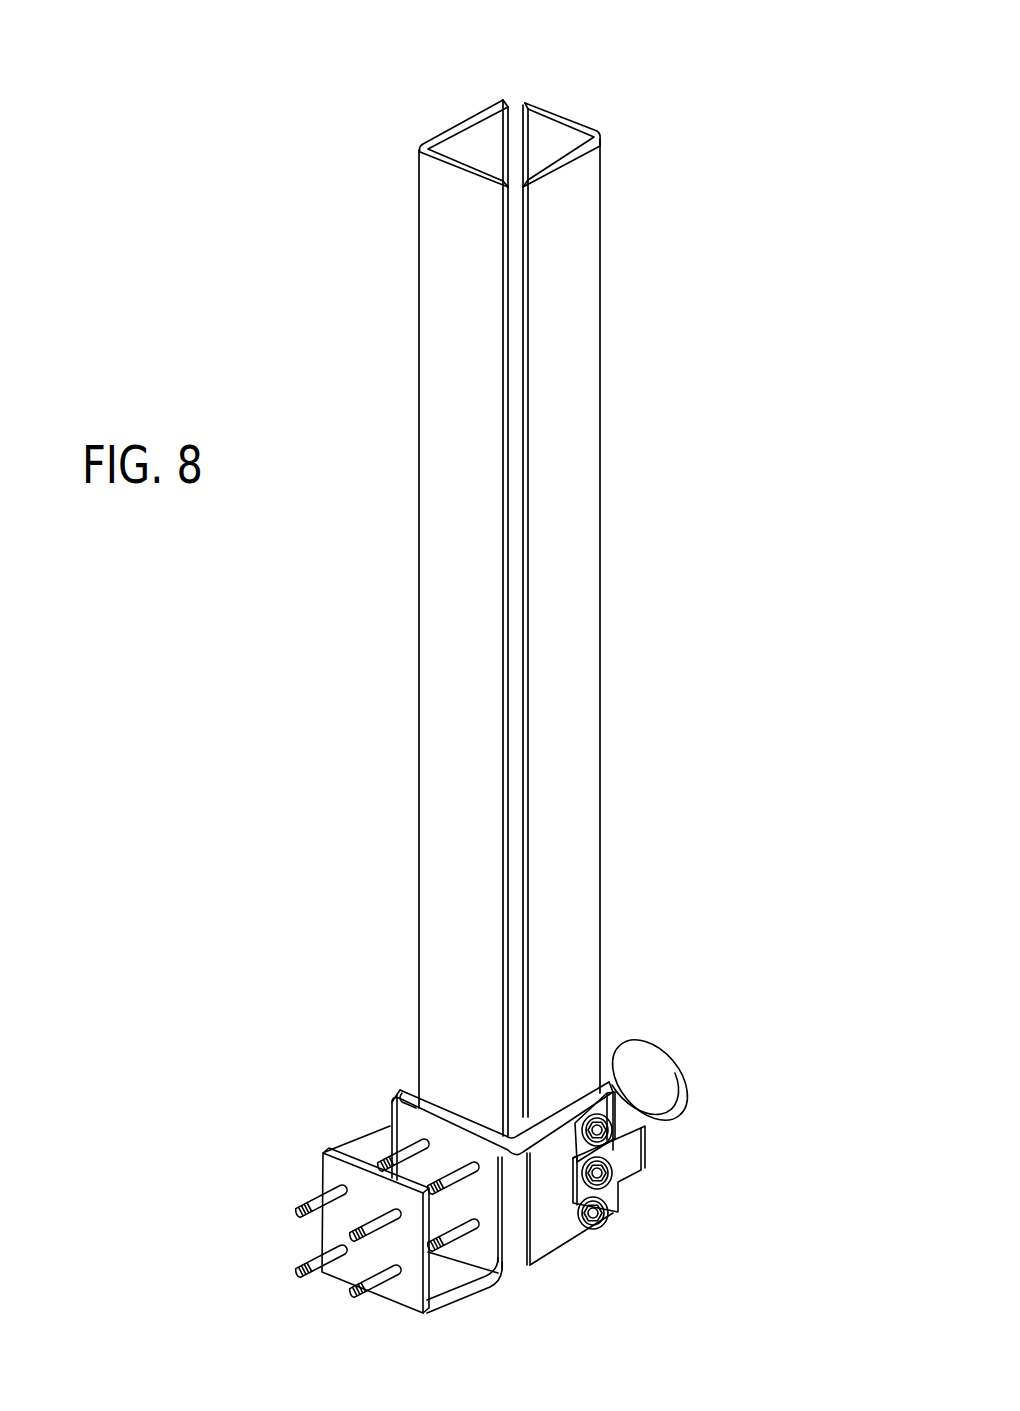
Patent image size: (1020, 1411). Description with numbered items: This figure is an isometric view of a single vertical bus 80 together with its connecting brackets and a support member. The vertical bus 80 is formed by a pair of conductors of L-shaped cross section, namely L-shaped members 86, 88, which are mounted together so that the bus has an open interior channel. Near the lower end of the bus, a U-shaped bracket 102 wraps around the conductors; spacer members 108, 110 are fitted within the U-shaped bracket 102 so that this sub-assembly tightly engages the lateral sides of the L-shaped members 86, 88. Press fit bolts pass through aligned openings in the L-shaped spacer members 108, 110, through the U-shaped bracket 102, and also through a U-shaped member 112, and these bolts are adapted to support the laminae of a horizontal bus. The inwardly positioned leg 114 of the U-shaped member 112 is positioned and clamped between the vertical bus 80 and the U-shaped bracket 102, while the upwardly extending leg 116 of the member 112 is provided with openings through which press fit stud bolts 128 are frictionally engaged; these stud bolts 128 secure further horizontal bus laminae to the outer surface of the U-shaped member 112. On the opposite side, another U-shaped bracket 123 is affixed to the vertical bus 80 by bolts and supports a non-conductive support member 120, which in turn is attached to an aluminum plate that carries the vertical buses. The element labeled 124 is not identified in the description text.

The vertical bus 80 is at (505, 84).
The L-shaped member 86 is at (465, 147).
The L-shaped member 88 is at (558, 142).
The U-shaped bracket 102 is at (397, 1127).
The spacer member 108 is at (417, 1095).
The spacer member 110 is at (580, 1100).
The U-shaped member 112 is at (477, 1290).
The inwardly positioned leg 114 is at (403, 1103).
The upwardly extending leg 116 is at (320, 1165).
The non-conductive support member 120 is at (642, 1057).
The U-shaped bracket 123 is at (628, 1160).
The bolt 124 is at (467, 1177).
The press fit stud bolts 128 is at (297, 1272).